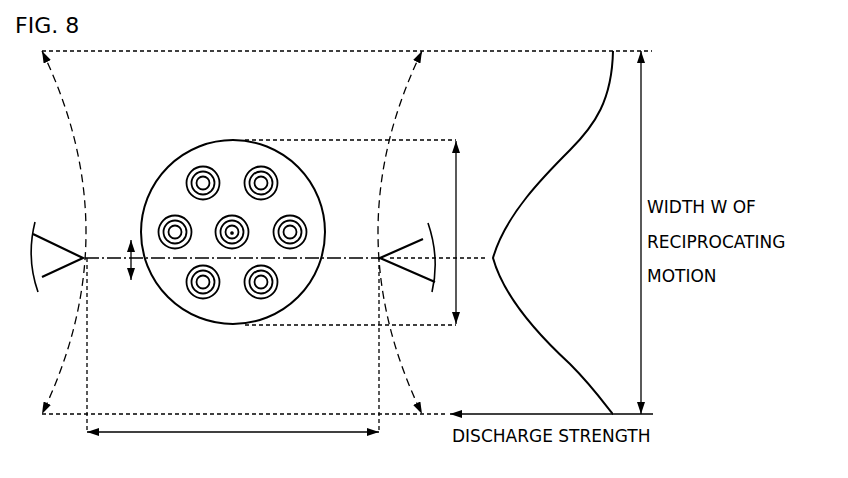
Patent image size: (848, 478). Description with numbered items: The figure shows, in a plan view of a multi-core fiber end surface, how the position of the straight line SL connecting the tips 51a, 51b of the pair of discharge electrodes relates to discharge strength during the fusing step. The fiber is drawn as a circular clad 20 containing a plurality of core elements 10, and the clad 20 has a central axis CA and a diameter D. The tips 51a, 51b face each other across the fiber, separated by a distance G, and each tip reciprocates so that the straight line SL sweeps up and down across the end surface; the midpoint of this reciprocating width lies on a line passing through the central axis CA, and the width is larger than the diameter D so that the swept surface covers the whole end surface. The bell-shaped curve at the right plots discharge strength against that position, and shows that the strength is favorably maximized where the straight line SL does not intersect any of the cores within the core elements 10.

The clad 20 is at (233, 144).
The core element 10 is at (274, 165).
The tip of discharge electrode 51a is at (80, 255).
The tip of discharge electrode 51b is at (392, 262).
The central axis CA is at (232, 236).
The straight line SL is at (105, 253).
The diameter of the clad D is at (464, 232).
The distance between the tips of the discharge electrodes G is at (233, 443).